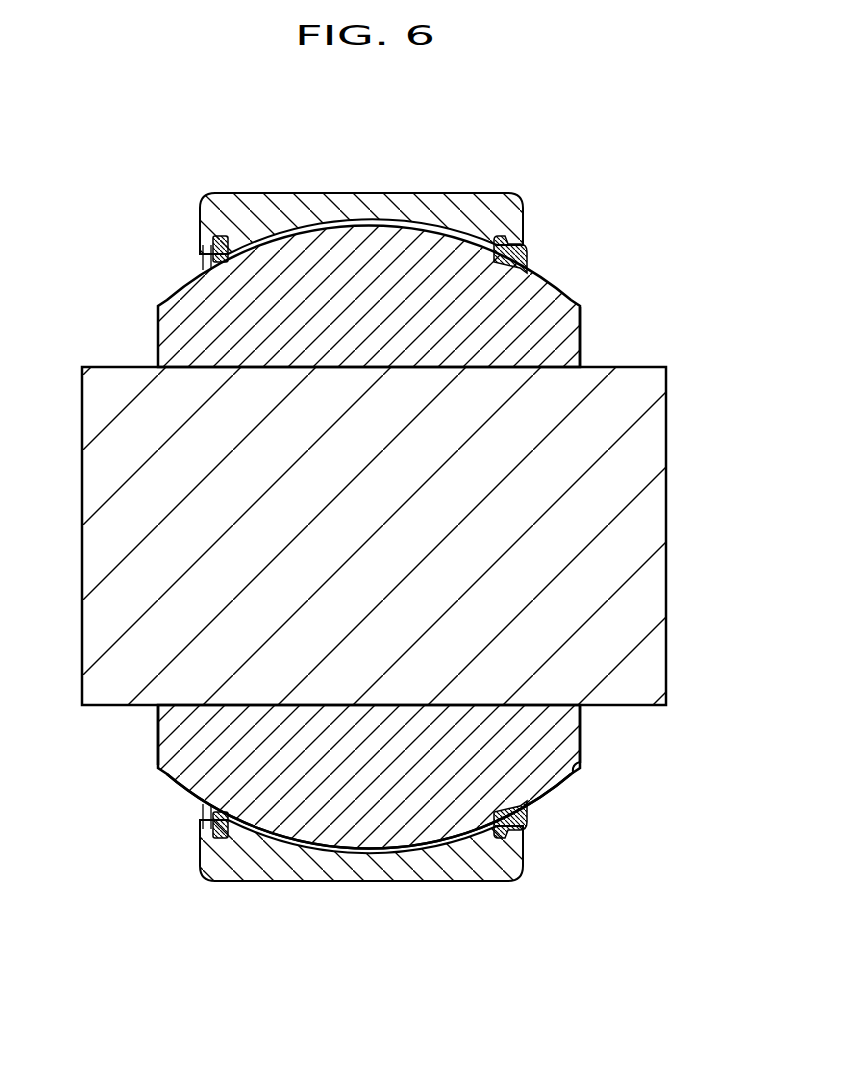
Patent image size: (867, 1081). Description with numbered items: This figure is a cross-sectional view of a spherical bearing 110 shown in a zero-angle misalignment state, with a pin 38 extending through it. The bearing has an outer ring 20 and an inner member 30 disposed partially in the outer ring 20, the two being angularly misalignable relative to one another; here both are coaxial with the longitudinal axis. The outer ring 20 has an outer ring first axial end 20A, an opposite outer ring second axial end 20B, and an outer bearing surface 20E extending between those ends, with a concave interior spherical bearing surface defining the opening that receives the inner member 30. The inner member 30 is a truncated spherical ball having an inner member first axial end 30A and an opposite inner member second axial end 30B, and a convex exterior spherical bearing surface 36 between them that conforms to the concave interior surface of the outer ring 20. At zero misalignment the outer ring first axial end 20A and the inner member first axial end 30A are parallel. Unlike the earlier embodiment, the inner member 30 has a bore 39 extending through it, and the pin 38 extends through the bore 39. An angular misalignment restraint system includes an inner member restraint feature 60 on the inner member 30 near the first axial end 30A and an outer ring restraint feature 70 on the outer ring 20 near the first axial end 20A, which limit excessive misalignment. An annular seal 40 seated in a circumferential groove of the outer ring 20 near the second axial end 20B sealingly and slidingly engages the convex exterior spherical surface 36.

The spherical bearing 110 is at (602, 120).
The outer ring 20 is at (447, 205).
The outer ring first axial end 20A is at (525, 223).
The outer ring second axial end 20B is at (199, 232).
The outer bearing surface 20E is at (445, 881).
The inner member 30 is at (582, 745).
The inner member first axial end 30A is at (582, 725).
The inner member second axial end 30B is at (155, 735).
The convex exterior spherical bearing surface 36 is at (177, 785).
The pin 38 is at (650, 498).
The bore 39 is at (598, 352).
The annular seal 40 is at (200, 817).
The inner member restraint feature 60 is at (578, 778).
The outer ring restraint feature 70 is at (528, 815).